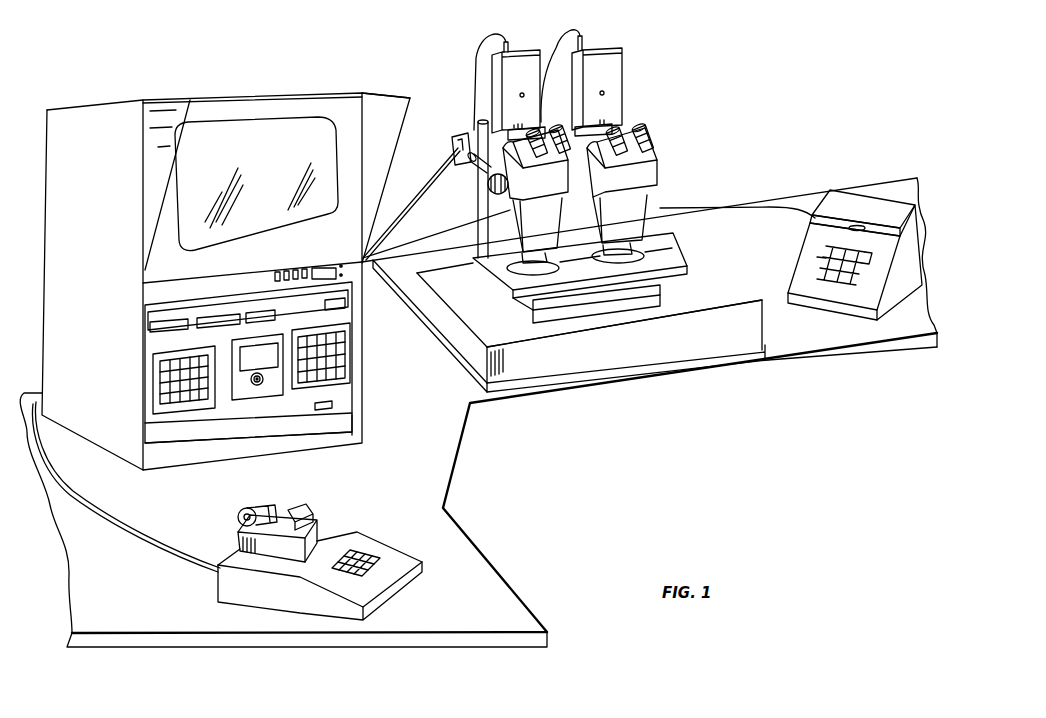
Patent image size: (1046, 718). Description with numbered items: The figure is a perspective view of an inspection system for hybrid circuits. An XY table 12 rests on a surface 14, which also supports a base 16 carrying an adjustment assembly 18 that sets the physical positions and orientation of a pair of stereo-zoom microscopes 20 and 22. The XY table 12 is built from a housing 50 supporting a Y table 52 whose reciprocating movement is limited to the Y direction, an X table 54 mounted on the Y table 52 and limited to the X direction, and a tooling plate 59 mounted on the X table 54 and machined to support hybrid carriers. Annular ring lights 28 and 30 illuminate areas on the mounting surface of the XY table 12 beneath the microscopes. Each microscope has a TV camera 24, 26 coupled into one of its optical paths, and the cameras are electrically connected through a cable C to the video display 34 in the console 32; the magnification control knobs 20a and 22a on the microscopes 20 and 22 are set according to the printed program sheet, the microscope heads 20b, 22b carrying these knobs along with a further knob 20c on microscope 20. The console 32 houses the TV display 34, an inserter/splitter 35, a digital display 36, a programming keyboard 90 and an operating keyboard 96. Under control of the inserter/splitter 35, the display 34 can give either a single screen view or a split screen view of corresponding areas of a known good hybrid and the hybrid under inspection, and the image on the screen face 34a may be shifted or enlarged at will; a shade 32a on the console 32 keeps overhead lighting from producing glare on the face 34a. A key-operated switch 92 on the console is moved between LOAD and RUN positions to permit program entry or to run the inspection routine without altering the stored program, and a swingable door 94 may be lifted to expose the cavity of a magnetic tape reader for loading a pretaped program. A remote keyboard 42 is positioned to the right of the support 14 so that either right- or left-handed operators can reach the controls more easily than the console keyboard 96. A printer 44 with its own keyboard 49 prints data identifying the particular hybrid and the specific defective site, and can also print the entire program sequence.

The XY table 12 is at (448, 377).
The surface 14 is at (771, 266).
The base 16 is at (420, 313).
The adjustment assembly 18 is at (440, 148).
The stereo-zoom microscope 20 is at (504, 183).
The magnification control knob 20a is at (553, 127).
The head of first microscope 20b is at (535, 165).
The focus knob 20c is at (488, 187).
The stereo-zoom microscope 22 is at (645, 178).
The magnification control knob 22a is at (650, 128).
The head of second microscope 22b is at (622, 162).
The TV camera 24 is at (493, 101).
The TV camera 26 is at (618, 88).
The annular shaped light source 28 is at (510, 262).
The annular shaped light source 30 is at (647, 253).
The console 32 is at (138, 78).
The shade 32a is at (384, 94).
The TV display 34 is at (252, 200).
The screen display 34a is at (230, 152).
The inserter/splitter 35 is at (175, 305).
The digital display 36 is at (179, 450).
The remote keyboard 42 is at (838, 320).
The printer 44 is at (320, 556).
The keyboard 49 is at (370, 557).
The housing 50 is at (668, 346).
The Y table 52 is at (545, 313).
The X table 54 is at (662, 289).
The tooling plate 59 is at (590, 276).
The programming keyboard 90 is at (152, 403).
The switch 92 is at (245, 383).
The swingable door 94 is at (259, 357).
The operating keyboard 96 is at (336, 383).
The cable C is at (435, 214).